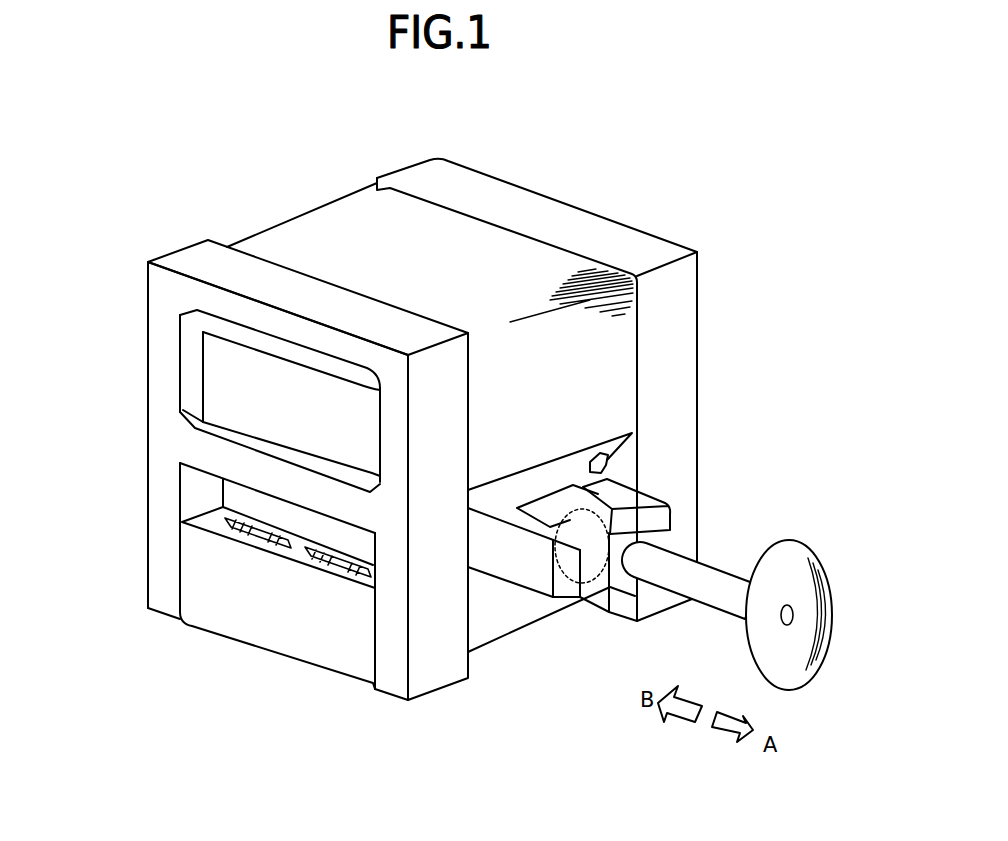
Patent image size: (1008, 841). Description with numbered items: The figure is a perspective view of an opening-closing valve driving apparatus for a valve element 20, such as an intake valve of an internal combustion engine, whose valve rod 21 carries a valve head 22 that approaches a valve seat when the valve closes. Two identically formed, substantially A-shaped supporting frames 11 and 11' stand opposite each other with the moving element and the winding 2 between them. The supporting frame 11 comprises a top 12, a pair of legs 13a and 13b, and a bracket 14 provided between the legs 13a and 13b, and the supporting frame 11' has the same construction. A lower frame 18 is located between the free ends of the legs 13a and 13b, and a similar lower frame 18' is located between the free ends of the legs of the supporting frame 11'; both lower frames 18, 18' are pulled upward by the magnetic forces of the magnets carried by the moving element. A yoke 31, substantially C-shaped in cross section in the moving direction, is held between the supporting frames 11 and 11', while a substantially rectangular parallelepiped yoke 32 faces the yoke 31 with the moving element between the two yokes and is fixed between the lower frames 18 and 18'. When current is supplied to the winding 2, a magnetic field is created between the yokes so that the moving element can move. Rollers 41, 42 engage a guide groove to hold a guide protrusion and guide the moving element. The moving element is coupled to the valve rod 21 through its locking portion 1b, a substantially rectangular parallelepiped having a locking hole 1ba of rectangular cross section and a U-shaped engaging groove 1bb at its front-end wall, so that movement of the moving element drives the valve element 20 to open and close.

The supporting frame 11 is at (308, 439).
The supporting frame 11' is at (537, 356).
The top 12 is at (215, 302).
The leg 13a is at (438, 668).
The leg 13b is at (157, 503).
The bracket 14 is at (243, 463).
The lower frame 18 is at (277, 652).
The lower frame 18' is at (595, 593).
The locking portion 1b is at (503, 567).
The locking hole 1ba is at (610, 477).
The engaging groove 1bb is at (670, 523).
The winding 2 is at (214, 388).
The valve element 20 is at (848, 563).
The valve rod 21 is at (733, 567).
The valve head 22 is at (793, 675).
The yoke 31 is at (300, 231).
The yoke 32 is at (530, 620).
The roller 41 is at (268, 536).
The roller 42 is at (354, 568).